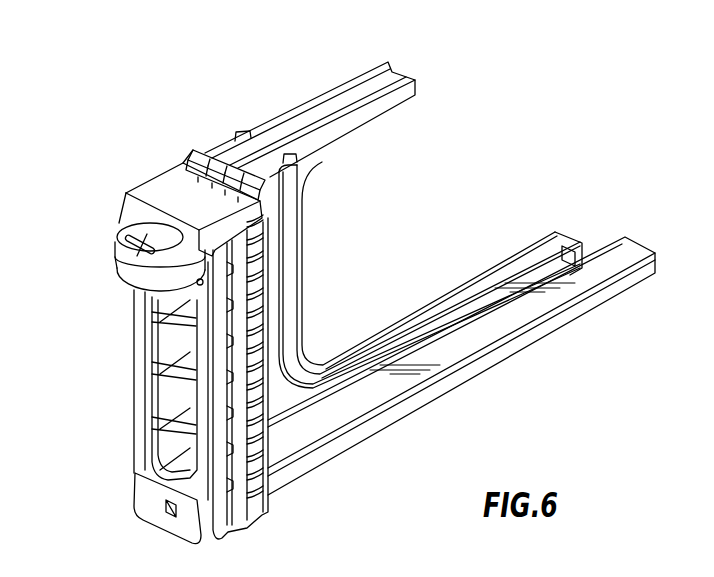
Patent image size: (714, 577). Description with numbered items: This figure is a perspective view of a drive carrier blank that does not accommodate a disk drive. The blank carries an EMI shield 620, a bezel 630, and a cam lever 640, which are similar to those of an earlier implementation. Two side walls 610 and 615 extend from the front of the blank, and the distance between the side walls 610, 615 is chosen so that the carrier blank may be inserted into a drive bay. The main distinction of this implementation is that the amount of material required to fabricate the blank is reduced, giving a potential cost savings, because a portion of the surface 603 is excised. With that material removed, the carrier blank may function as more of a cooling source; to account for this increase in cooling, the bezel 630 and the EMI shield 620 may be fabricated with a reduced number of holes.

The surface 603 is at (275, 290).
The side wall 610 is at (342, 102).
The side wall 615 is at (490, 327).
The EMI shield 620 is at (200, 147).
The bezel 630 is at (158, 195).
The cam lever 640 is at (136, 402).